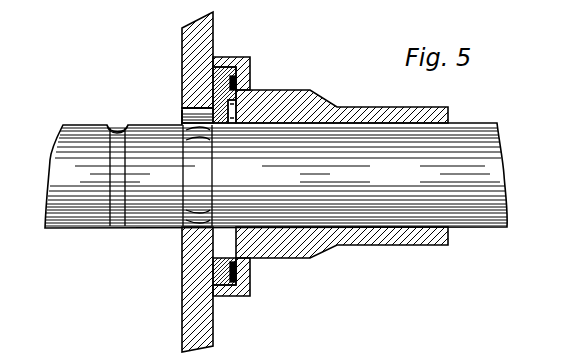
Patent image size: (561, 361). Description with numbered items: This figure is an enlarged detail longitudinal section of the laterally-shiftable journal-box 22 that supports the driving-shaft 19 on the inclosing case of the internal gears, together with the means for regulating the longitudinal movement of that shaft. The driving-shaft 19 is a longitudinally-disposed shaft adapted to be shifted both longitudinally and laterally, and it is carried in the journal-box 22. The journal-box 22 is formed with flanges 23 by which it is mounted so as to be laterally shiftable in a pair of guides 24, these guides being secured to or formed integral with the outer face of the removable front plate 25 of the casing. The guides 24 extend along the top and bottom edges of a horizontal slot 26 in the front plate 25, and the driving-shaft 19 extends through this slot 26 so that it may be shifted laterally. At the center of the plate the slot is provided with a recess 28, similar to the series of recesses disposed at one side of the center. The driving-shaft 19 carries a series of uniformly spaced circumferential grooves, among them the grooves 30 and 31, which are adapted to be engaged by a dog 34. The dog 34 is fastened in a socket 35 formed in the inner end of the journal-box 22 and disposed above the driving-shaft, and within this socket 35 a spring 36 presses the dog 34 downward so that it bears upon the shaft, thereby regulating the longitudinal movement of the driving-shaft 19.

The driving-shaft 19 is at (276, 175).
The journal-box 22 is at (342, 168).
The flanges 23 is at (238, 79).
The guides 24 is at (251, 63).
The removable front plate 25 is at (214, 38).
The horizontal slot 26 is at (181, 289).
The recess 28 is at (149, 84).
The circumferential groove 30 is at (208, 176).
The circumferential groove 31 is at (118, 127).
The dog 34 is at (181, 122).
The socket 35 is at (182, 110).
The spring 36 is at (222, 122).